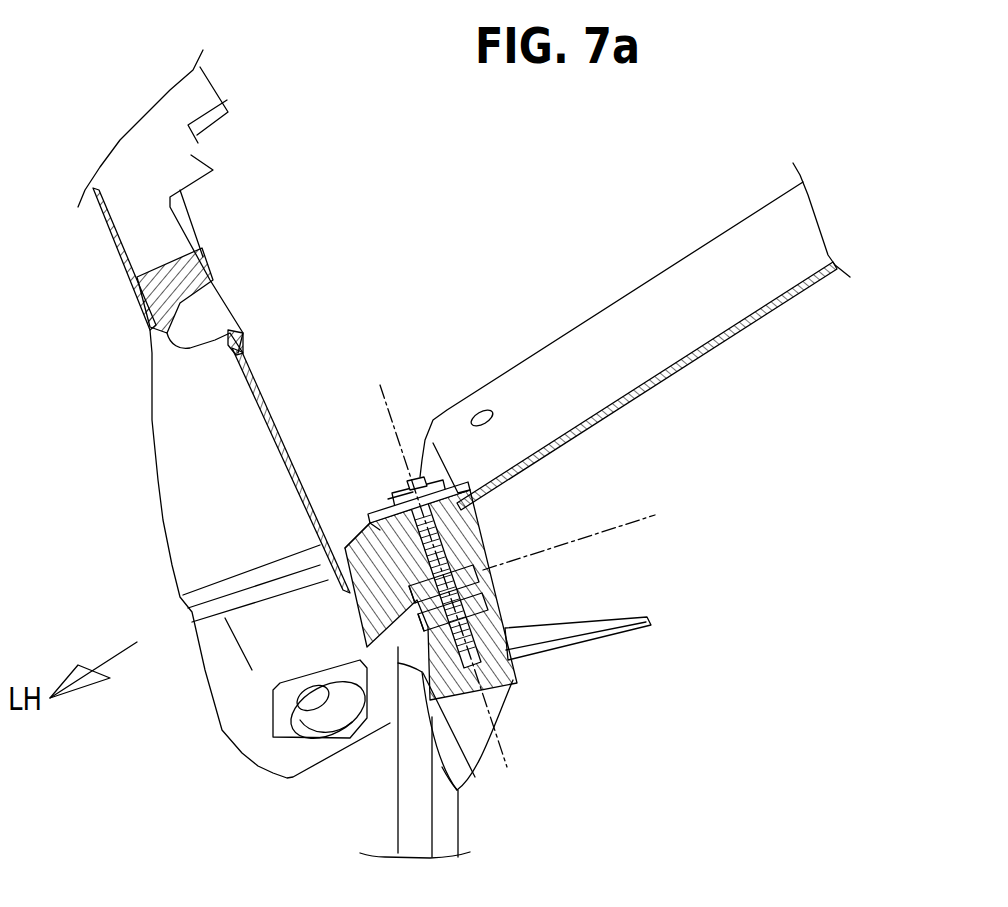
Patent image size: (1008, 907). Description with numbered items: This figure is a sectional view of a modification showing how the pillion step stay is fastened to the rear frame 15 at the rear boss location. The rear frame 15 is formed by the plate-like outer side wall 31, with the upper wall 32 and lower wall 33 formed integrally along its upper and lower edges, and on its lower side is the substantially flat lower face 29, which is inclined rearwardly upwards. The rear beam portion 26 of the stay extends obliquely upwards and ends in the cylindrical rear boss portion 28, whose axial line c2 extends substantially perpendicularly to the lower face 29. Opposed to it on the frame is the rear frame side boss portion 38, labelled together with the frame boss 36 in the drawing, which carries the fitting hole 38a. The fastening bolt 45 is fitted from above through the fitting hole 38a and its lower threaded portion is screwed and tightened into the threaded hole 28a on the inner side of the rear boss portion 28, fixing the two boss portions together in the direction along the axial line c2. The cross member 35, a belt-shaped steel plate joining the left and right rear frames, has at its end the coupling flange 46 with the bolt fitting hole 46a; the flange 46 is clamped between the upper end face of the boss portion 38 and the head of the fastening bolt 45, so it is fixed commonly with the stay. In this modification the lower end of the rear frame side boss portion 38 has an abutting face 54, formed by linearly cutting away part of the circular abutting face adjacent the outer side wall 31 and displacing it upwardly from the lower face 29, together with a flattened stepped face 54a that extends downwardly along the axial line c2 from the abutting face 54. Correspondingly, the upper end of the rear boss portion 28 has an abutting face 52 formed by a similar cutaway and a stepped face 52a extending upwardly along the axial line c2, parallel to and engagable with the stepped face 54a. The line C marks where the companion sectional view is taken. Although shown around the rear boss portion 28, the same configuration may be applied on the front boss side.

The rear frame 15 is at (140, 380).
The rear beam portion 26 is at (403, 832).
The rear boss portion 28 is at (503, 718).
The threaded hole 28a is at (475, 773).
The lower face 29 is at (363, 663).
The outer side wall 31 is at (170, 453).
The upper wall 32 is at (198, 143).
The lower wall 33 is at (597, 638).
The cross member 35 is at (596, 304).
The bracket 36 is at (486, 587).
The rear frame side boss portion 38 is at (483, 522).
The fitting hole 38a is at (363, 557).
The fastening bolt 45 is at (418, 478).
The coupling flange 46 is at (390, 522).
The bolt fitting hole 46a is at (413, 492).
The abutting face 52 is at (478, 572).
The stepped face 52a is at (425, 625).
The abutting face 54 is at (483, 597).
The stepped face 54a is at (420, 597).
The axial line c2 is at (378, 397).
The line C is at (652, 530).